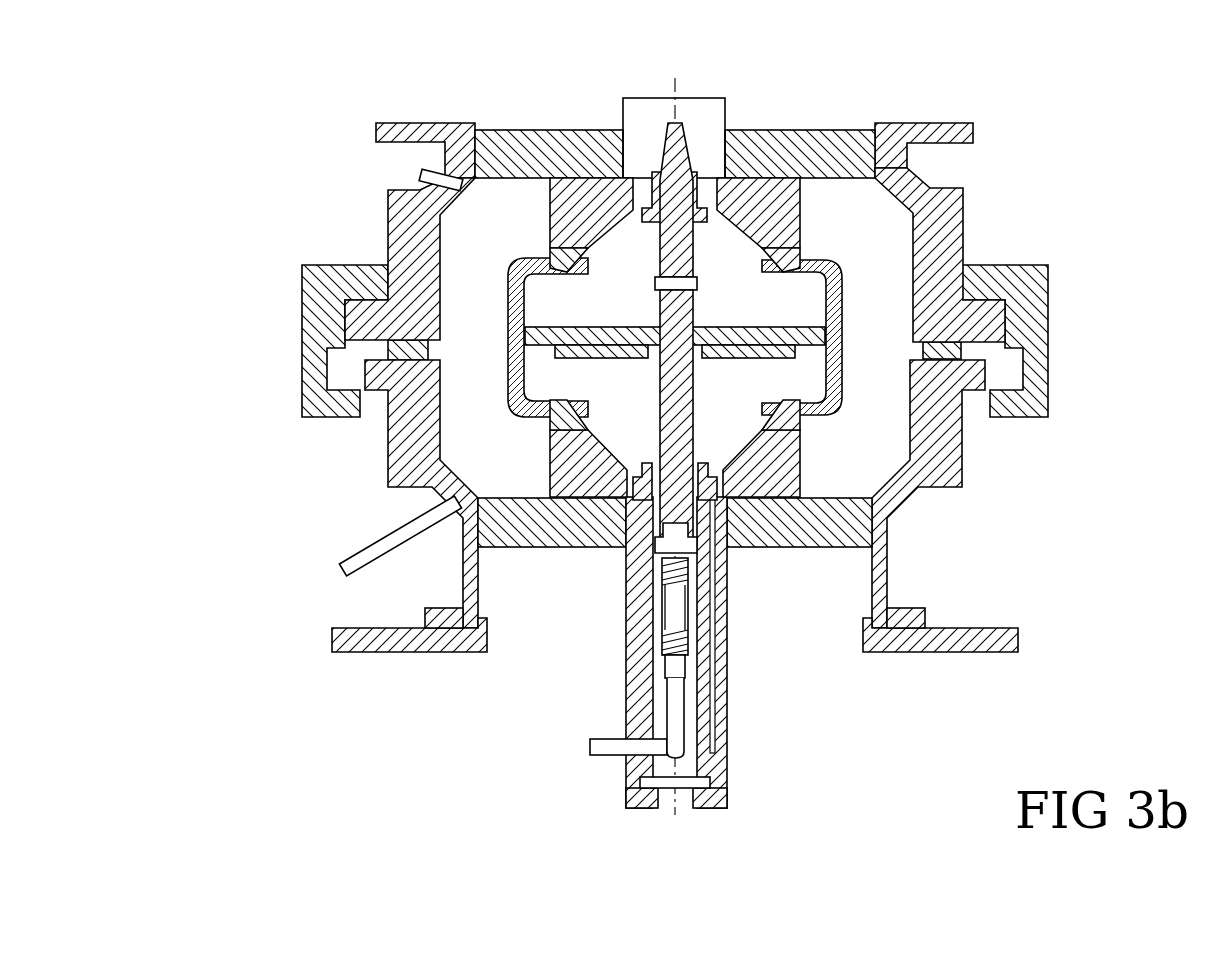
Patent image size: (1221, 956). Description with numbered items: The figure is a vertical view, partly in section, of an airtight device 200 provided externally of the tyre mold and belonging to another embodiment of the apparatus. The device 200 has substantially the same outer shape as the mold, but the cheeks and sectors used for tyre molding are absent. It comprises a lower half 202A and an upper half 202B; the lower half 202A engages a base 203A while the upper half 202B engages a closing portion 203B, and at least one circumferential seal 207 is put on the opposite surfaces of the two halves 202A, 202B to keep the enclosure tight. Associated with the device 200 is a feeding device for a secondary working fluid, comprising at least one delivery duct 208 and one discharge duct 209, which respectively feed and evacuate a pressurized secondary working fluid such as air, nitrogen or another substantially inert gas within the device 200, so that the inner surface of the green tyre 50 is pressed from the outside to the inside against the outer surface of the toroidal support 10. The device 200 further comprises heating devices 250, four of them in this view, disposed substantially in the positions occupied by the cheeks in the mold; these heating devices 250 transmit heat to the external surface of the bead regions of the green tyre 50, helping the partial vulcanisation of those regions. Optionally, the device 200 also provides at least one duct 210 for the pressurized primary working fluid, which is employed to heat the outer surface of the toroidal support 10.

The airtight device 200 is at (228, 227).
The discharge duct 209 is at (420, 176).
The upper half 202B is at (398, 227).
The lower half 202A is at (388, 463).
The closing portion 203B is at (447, 122).
The base 203A is at (414, 653).
The delivery duct 208 is at (343, 570).
The duct for primary working fluid 210 is at (590, 747).
The heating device 250 is at (562, 248).
The green tyre 50 is at (840, 262).
The toroidal support 10 is at (840, 405).
The circumferential seal 207 is at (965, 345).